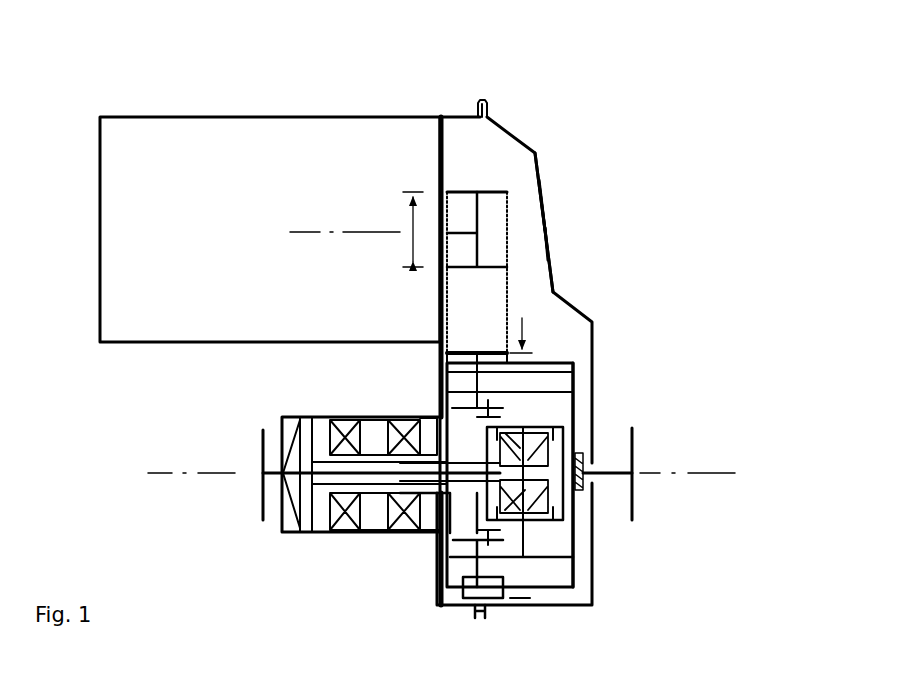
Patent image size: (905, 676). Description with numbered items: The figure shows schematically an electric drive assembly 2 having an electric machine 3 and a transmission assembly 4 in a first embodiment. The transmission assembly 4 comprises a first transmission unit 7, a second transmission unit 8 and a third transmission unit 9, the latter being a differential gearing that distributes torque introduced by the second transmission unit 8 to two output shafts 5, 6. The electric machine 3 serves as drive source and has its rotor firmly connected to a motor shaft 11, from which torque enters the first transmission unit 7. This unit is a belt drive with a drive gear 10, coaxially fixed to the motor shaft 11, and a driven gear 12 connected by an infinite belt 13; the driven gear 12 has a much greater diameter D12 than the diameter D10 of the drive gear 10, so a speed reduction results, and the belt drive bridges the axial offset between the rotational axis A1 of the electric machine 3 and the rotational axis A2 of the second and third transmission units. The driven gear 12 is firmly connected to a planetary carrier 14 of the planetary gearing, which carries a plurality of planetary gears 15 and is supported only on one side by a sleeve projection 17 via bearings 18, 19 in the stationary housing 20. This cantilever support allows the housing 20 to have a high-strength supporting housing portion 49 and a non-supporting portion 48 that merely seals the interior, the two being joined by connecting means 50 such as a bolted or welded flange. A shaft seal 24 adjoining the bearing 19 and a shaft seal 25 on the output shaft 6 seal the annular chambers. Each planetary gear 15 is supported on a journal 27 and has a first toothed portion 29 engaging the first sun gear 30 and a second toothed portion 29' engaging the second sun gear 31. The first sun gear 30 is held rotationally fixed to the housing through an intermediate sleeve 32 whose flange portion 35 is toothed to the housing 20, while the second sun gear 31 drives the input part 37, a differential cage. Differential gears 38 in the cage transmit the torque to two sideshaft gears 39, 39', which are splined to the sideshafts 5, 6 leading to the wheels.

The electric drive assembly 2 is at (362, 90).
The electric machine 3 is at (238, 136).
The transmission assembly 4 is at (530, 133).
The output shaft 5 is at (373, 534).
The output shaft 6 is at (605, 475).
The first transmission unit 7 is at (518, 240).
The second transmission unit 8 is at (540, 364).
The third transmission unit 9 is at (566, 425).
The drive gear 10 is at (487, 190).
The motor shaft 11 is at (457, 240).
The driven gear 12 is at (514, 378).
The infinite belt 13 is at (490, 350).
The planetary carrier 14 is at (560, 416).
The planetary gears 15 is at (540, 412).
The sleeve projection 17 is at (370, 440).
The bearing 18 is at (336, 418).
The bearing 19 is at (392, 418).
The housing 20 is at (550, 190).
The shaft seal 24 is at (420, 450).
The shaft seal 25 is at (584, 458).
The journal 27 is at (540, 520).
The first toothed portion 29 is at (469, 620).
The second toothed portion 29' is at (495, 634).
The first sun gear 30 is at (437, 548).
The second sun gear 31 is at (520, 603).
The intermediate sleeve 32 is at (387, 534).
The flange portion 35 is at (318, 520).
The input part 37 is at (548, 392).
The differential gears 38 is at (552, 528).
The sideshaft gear 39 is at (556, 587).
The sideshaft gear 39' is at (620, 446).
The non-supporting portion 48 is at (548, 158).
The supporting housing portion 49 is at (447, 114).
The connecting means 50 is at (488, 100).
The rotational axis A1 is at (375, 230).
The rotational axis A2 is at (163, 468).
The diameter D10 is at (407, 248).
The diameter D12 is at (539, 334).